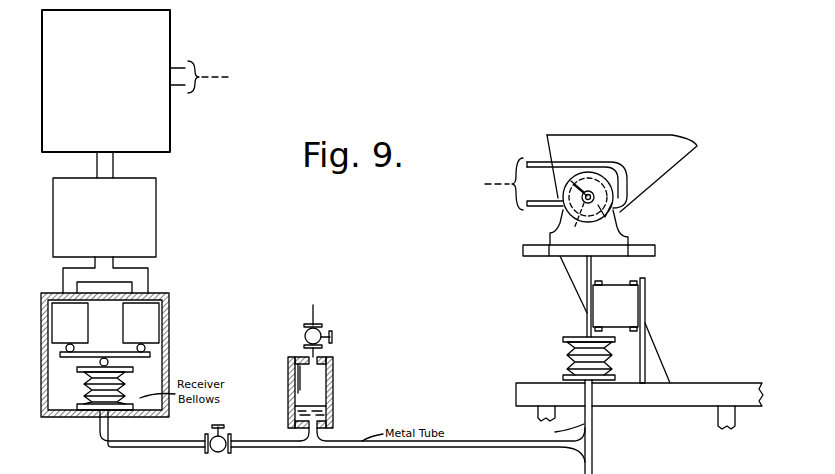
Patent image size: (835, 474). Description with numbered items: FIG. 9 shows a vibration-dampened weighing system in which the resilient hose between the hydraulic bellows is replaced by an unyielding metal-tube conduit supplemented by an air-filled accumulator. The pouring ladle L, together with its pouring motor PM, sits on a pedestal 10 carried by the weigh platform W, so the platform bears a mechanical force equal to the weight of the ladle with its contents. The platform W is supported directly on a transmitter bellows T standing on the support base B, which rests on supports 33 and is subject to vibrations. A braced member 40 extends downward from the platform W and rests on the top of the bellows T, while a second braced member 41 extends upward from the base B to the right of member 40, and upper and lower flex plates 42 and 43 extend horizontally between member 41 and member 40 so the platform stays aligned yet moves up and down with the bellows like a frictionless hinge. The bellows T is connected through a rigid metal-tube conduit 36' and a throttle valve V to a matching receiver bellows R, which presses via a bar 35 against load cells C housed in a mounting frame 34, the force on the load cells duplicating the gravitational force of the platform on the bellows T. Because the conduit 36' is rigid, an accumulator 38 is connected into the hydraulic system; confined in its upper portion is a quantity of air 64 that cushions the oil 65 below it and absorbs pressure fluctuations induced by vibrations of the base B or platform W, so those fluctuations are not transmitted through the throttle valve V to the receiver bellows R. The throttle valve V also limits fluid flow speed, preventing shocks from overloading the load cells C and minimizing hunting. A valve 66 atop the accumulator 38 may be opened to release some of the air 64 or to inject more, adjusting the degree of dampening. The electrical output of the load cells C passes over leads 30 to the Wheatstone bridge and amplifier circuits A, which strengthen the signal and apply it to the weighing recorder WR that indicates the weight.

The pedestal 10 is at (589, 208).
The electrical leads 30 is at (110, 266).
The base supports 33 is at (538, 417).
The mounting frame 34 is at (42, 369).
The bar 35 is at (133, 357).
The rigid metal-tube conduit 36' is at (527, 427).
The air filled accumulator 38 is at (290, 382).
The braced member 40 is at (587, 282).
The second braced member 41 is at (645, 300).
The upper flex plate 42 is at (626, 283).
The lower flex plate 43 is at (618, 331).
The air or other gas 64 is at (318, 385).
The oil or other fluid 65 is at (323, 419).
The valve 66 is at (305, 331).
The Wheatstone bridge and amplifier circuits A is at (53, 217).
The support base B is at (516, 392).
The load cells C is at (123, 333).
The receiver bellows R is at (86, 388).
The transmitter bellows T is at (565, 366).
The throttle valve V is at (222, 432).
The weigh platform W is at (523, 250).
The pouring motor PM is at (556, 184).
The pouring ladle L is at (622, 162).
The weighing recorder WR is at (137, 81).